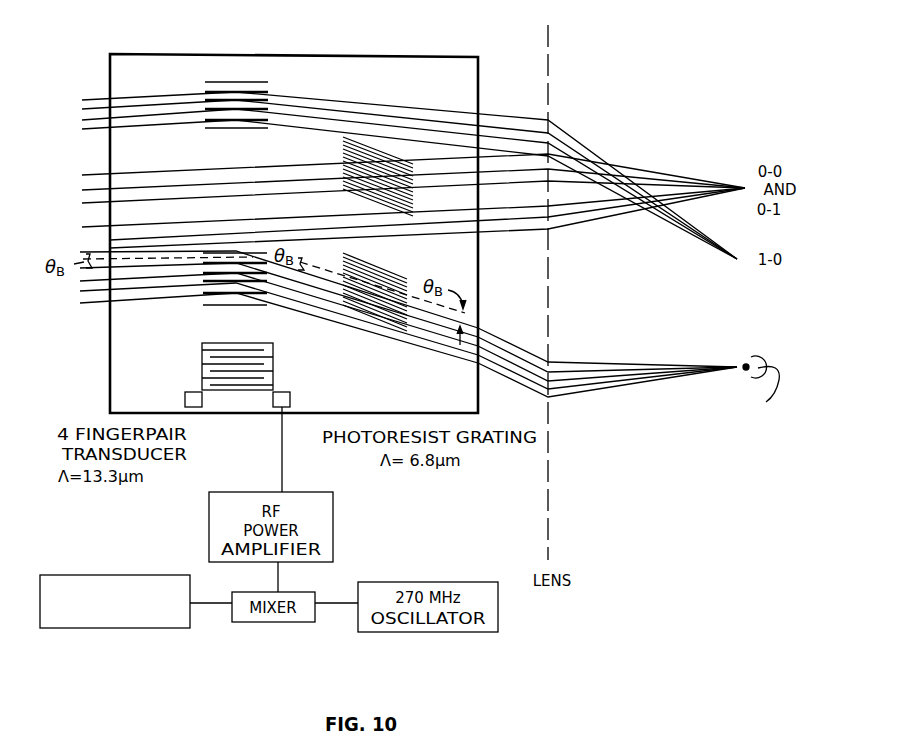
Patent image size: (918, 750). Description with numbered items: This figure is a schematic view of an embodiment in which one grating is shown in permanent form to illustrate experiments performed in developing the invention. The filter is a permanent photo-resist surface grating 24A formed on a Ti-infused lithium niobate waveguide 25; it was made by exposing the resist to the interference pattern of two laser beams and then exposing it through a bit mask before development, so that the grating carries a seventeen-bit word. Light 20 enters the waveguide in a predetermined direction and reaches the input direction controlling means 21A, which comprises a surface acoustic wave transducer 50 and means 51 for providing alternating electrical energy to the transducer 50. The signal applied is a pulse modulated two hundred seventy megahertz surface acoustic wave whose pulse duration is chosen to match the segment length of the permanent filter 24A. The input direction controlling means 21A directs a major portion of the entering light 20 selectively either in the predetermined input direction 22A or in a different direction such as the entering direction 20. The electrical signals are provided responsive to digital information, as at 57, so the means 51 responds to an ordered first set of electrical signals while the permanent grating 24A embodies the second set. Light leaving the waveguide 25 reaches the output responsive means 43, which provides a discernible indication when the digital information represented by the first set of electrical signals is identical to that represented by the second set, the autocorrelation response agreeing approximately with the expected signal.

The entering light 20 is at (99, 100).
The input direction controlling means 21A is at (221, 76).
The predetermined input direction 22A is at (300, 101).
The permanent photo-resist surface grating 24A is at (383, 101).
The Ti-infused LiNbO3 waveguide 25 is at (148, 160).
The output responsive means 43 is at (740, 360).
The surface acoustic wave transducer 50 is at (198, 364).
The means for providing alternating electrical energy 51 is at (281, 458).
The digital information source 57 is at (88, 574).